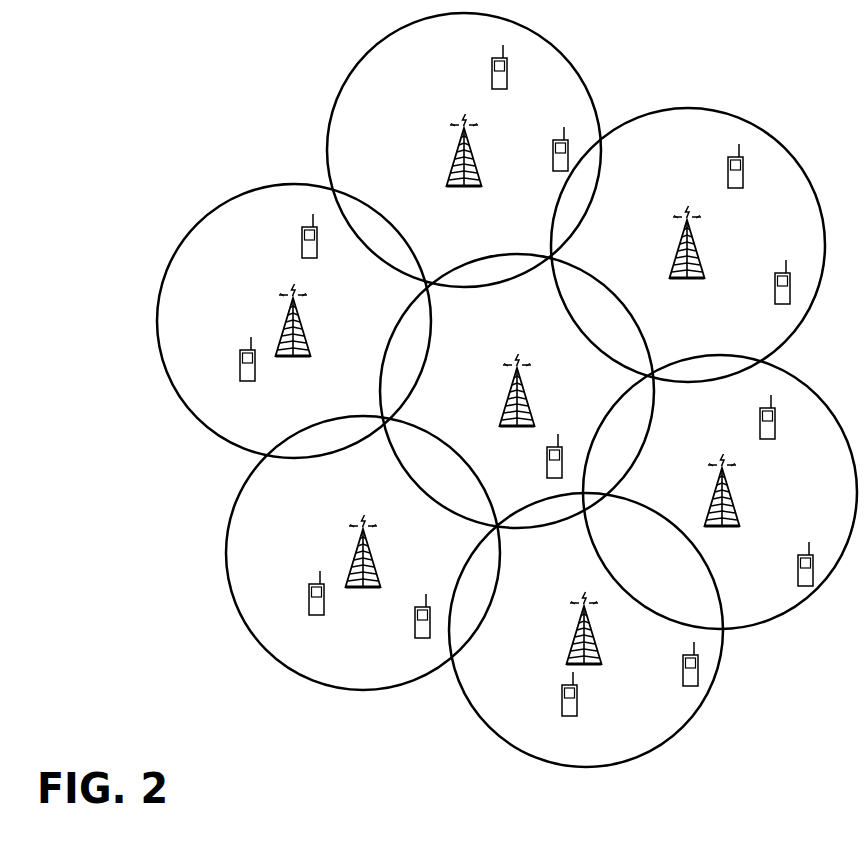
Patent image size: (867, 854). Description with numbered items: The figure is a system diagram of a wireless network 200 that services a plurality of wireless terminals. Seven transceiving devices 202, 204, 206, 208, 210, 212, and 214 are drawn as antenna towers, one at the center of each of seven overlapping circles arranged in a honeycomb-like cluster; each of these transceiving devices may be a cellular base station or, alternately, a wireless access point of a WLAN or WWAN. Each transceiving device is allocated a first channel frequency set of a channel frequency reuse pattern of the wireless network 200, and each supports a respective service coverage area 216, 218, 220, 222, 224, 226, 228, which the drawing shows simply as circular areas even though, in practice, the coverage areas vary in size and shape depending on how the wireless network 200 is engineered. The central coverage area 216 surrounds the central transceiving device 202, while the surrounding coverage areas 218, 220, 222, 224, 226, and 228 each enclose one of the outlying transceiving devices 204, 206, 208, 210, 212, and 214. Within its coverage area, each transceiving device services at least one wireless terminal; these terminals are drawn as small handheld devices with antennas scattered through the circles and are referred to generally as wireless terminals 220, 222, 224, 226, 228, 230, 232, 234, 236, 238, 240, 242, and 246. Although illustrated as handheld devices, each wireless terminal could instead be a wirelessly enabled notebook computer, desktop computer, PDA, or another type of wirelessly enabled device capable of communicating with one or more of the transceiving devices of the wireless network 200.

The wireless network 200 is at (103, 615).
The transceiving device 202 is at (500, 405).
The transceiving device 204 is at (453, 166).
The transceiving device 206 is at (675, 255).
The transceiving device 208 is at (740, 508).
The transceiving device 210 is at (568, 645).
The transceiving device 212 is at (348, 567).
The transceiving device 214 is at (278, 332).
The service coverage area 216 is at (482, 256).
The service coverage area 218 is at (352, 72).
The service coverage area / wireless terminal 220 is at (707, 109).
The service coverage area / wireless terminal 222 is at (818, 395).
The service coverage area / wireless terminal 224 is at (700, 706).
The service coverage area / wireless terminal 226 is at (310, 680).
The service coverage area / wireless terminal 228 is at (233, 197).
The wireless terminal 230 is at (760, 433).
The wireless terminal 232 is at (798, 581).
The wireless terminal 234 is at (683, 679).
The wireless terminal 236 is at (562, 711).
The wireless terminal 238 is at (415, 631).
The wireless terminal 240 is at (309, 611).
The wireless terminal 242 is at (240, 376).
The wireless terminal 246 is at (302, 251).